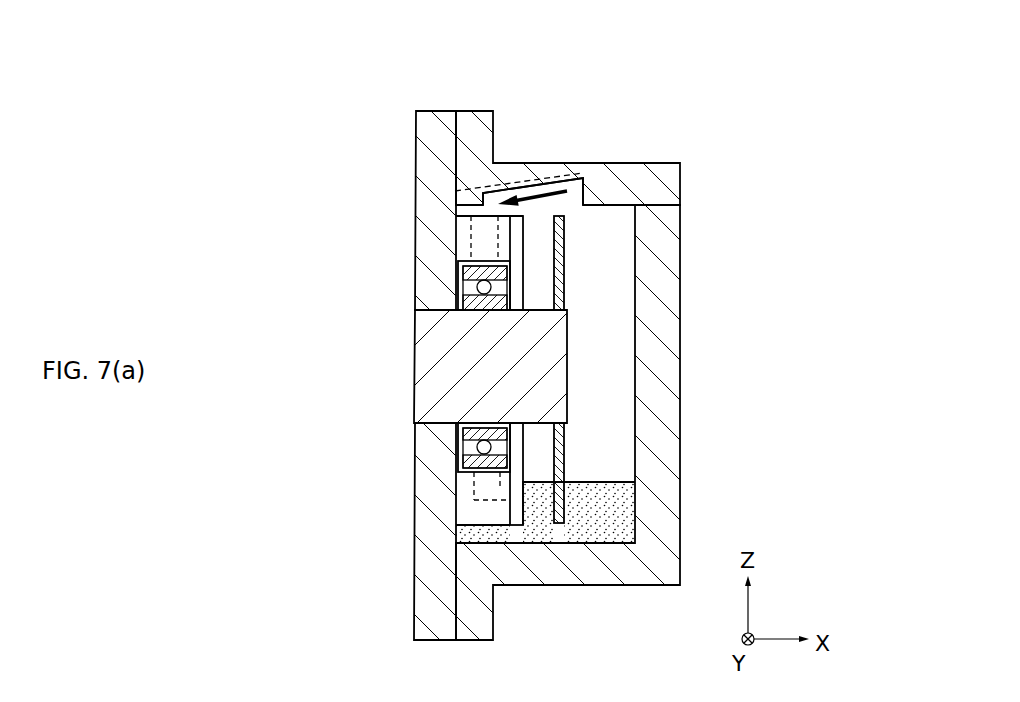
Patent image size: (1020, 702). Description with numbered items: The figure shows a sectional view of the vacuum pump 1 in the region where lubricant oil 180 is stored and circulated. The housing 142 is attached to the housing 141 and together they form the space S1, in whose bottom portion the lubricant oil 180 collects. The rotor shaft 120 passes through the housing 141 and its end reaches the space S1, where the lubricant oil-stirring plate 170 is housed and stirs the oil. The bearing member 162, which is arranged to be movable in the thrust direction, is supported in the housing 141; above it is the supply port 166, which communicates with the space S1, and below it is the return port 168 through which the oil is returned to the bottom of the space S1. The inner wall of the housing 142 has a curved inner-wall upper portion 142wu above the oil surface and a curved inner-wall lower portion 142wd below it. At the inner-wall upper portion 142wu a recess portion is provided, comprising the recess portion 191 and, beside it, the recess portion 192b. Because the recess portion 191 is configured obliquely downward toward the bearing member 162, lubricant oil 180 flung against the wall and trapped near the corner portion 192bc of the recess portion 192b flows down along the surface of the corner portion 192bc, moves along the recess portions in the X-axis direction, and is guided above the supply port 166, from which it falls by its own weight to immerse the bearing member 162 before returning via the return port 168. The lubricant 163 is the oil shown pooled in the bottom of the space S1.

The vacuum pump 1 is at (708, 207).
The rotor shaft 120 is at (428, 368).
The housing 141 is at (440, 507).
The housing 142 is at (666, 335).
The inner-wall upper portion 142wu is at (630, 223).
The inner-wall lower portion 142wd is at (628, 461).
The bearing member 162 is at (458, 302).
The lubricant 163 is at (515, 517).
The supply port 166 is at (470, 246).
The return port 168 is at (468, 497).
The lubricant oil-stirring plate 170 is at (565, 455).
The lubricant oil 180 is at (532, 197).
The recess portion 191 is at (572, 190).
The recess portion 192b is at (517, 185).
The corner portion 192bc is at (545, 186).
The space S1 is at (613, 393).